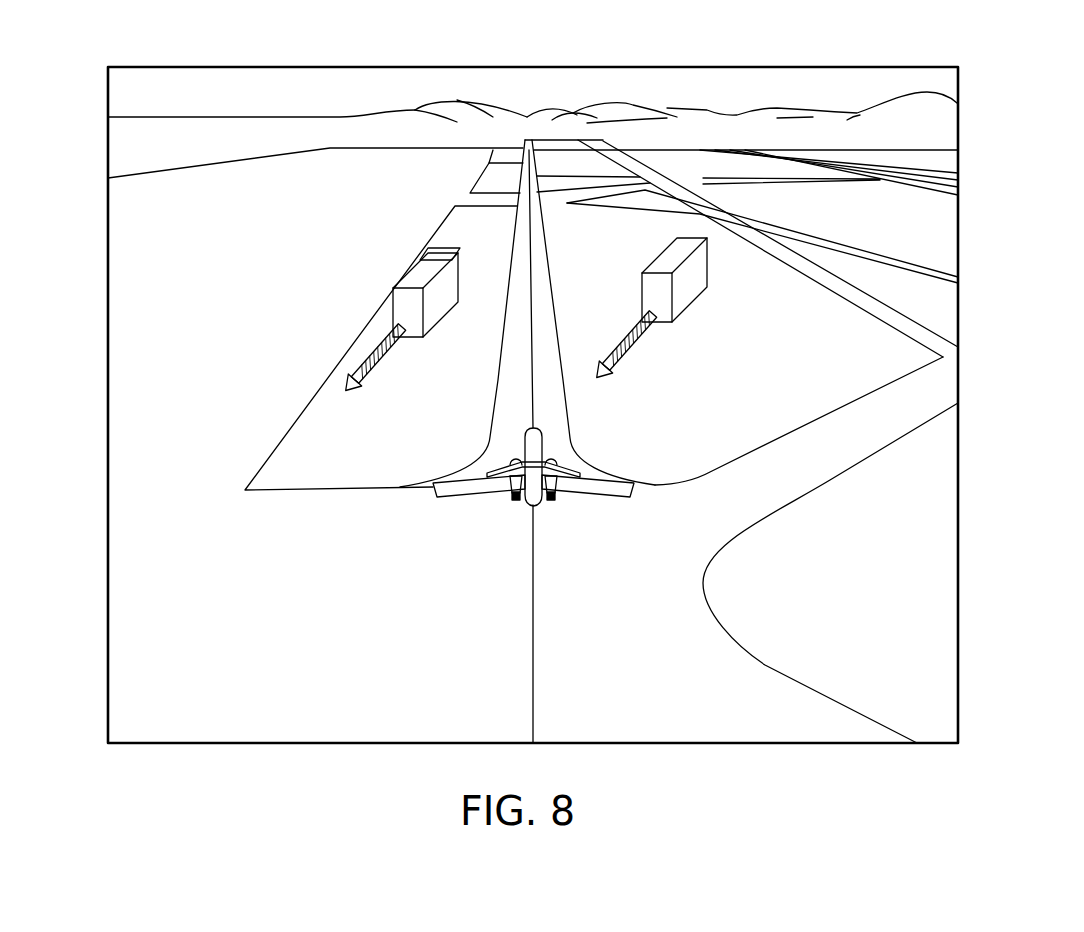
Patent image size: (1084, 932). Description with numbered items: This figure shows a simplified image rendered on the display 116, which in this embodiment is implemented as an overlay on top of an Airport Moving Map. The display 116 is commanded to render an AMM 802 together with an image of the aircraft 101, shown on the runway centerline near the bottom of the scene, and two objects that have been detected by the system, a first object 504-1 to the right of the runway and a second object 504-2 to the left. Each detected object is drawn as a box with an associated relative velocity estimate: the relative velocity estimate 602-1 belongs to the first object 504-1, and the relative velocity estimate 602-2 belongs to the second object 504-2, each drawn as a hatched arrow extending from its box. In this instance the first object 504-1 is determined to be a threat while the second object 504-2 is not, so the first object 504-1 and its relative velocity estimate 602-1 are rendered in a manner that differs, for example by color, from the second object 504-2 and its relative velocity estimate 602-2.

The display 116 is at (619, 66).
The AMM 802 is at (160, 206).
The second object 504-2 is at (391, 258).
The first object 504-1 is at (703, 313).
The relative velocity estimate 602-1 is at (378, 363).
The relative velocity estimate 602-2 is at (622, 362).
The aircraft 101 is at (543, 448).